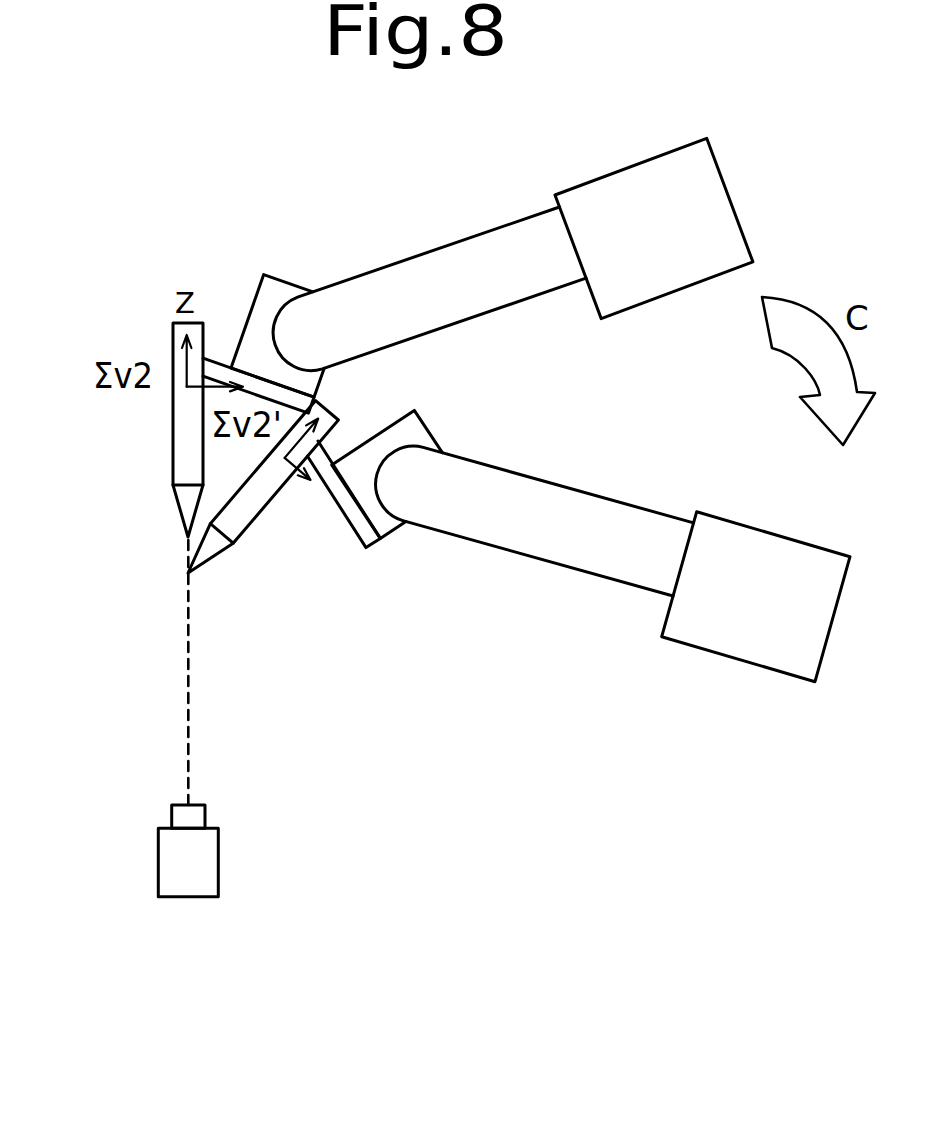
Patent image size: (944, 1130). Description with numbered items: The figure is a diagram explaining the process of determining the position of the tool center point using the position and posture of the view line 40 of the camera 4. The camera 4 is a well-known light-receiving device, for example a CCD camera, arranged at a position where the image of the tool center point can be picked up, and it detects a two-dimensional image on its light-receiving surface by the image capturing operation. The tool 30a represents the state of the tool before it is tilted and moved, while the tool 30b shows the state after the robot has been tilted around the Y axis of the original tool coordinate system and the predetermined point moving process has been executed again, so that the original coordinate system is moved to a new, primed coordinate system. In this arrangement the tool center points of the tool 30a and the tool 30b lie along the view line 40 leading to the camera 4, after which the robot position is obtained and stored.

The tool 30a is at (182, 455).
The tool 30b is at (255, 507).
The view line 40 is at (188, 732).
The camera 4 is at (168, 855).